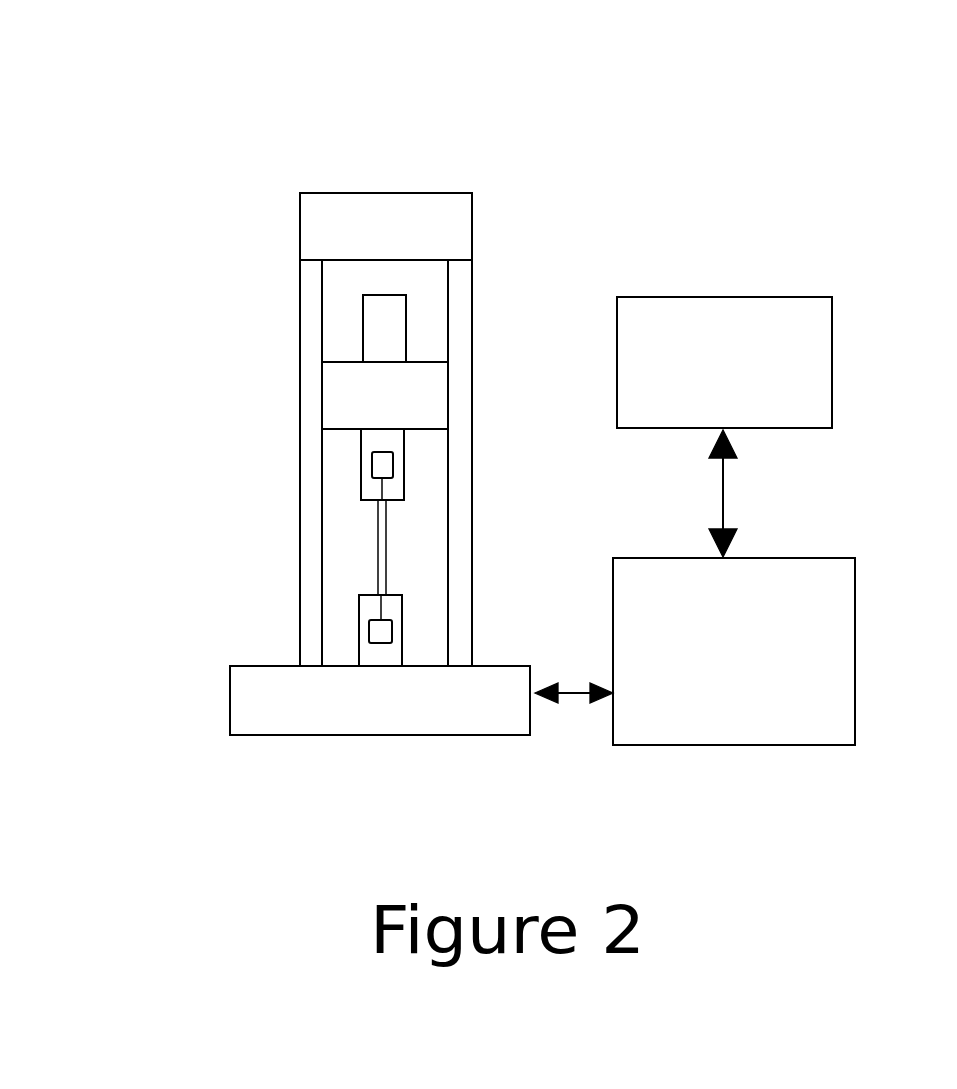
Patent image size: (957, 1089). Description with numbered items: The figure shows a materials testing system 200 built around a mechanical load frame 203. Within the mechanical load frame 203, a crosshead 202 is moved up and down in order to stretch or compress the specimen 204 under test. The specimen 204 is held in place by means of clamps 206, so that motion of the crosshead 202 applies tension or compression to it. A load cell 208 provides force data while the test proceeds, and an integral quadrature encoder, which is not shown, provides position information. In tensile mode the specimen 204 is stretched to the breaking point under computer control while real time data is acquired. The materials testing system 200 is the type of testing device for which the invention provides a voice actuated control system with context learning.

The materials testing system 200 is at (548, 140).
The crosshead 202 is at (323, 389).
The mechanical load frame 203 is at (291, 72).
The specimen 204 is at (419, 519).
The clamps 206 is at (328, 580).
The load cell 208 is at (422, 319).